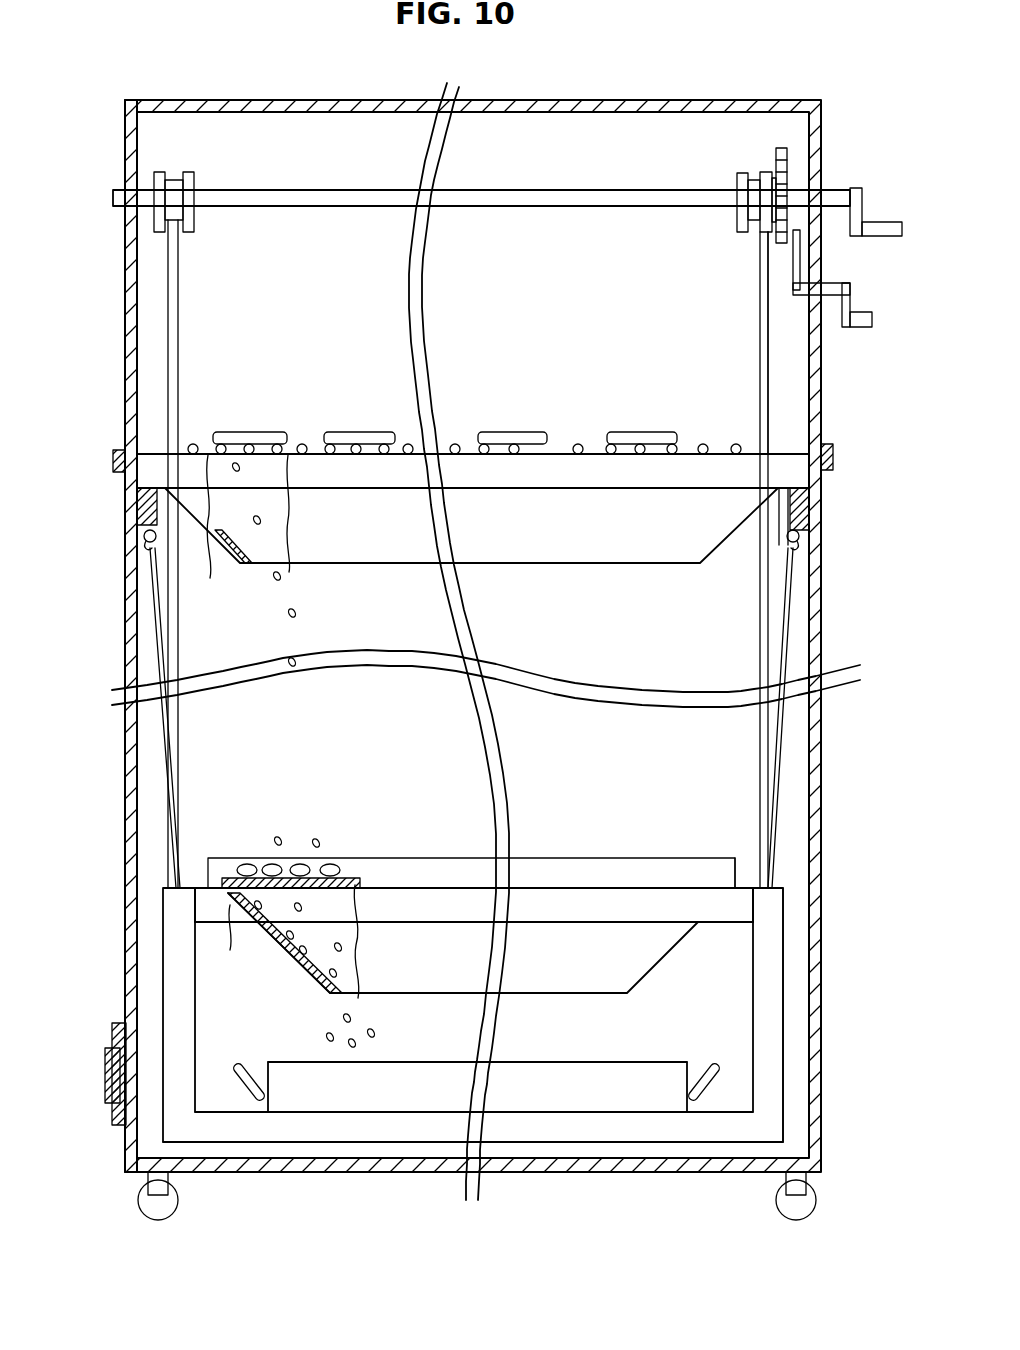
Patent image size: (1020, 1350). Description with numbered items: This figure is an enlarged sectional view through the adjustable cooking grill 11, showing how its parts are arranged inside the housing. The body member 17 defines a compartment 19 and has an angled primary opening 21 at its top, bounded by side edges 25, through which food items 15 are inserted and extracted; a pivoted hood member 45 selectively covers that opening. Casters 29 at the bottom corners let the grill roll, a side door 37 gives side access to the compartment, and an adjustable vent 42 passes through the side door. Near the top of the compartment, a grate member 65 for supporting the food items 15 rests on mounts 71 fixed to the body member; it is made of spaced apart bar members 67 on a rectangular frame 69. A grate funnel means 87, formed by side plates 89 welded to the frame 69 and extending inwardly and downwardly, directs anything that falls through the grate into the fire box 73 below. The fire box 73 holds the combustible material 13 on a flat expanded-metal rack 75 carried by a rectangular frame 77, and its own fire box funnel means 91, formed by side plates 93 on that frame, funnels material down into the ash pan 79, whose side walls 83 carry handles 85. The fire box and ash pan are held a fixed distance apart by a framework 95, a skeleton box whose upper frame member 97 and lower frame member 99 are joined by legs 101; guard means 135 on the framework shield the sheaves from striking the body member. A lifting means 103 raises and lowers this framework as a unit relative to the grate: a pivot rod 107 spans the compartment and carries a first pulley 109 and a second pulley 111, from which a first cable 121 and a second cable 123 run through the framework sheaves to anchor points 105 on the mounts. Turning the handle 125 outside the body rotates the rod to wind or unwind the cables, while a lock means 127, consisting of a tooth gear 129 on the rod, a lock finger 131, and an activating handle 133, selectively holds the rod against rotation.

The adjustable cooking grill 11 is at (790, 64).
The combustible material 13 is at (248, 862).
The food items 15 is at (328, 432).
The body member 17 is at (822, 613).
The compartment 19 is at (603, 767).
The primary opening 21 is at (782, 433).
The side edges 25 is at (119, 450).
The casters 29 is at (148, 1202).
The side door 37 is at (110, 1045).
The adjustable vent 42 is at (104, 1086).
The hood member 45 is at (122, 286).
The grate member 65 is at (714, 437).
The bar members 67 is at (195, 443).
The frame 69 is at (792, 470).
The mounts 71 is at (145, 505).
The fire box 73 is at (627, 857).
The rack 75 is at (356, 882).
The frame 77 is at (548, 872).
The ash pan 79 is at (618, 1056).
The side walls 83 is at (562, 1063).
The handles 85 is at (246, 1070).
The grate funnel means 87 is at (612, 568).
The side plates 89 is at (229, 555).
The fire box funnel means 91 is at (657, 968).
The side plates 93 is at (303, 960).
The framework 95 is at (793, 1040).
The upper frame member 97 is at (690, 886).
The lower frame member 99 is at (352, 1135).
The legs 101 is at (185, 990).
The lifting means 103 is at (708, 158).
The anchor points 105 is at (144, 538).
The pivot rod 107 is at (515, 195).
The first pulley 109 is at (736, 214).
The second pulley 111 is at (198, 212).
The first cable 121 is at (760, 304).
The second cable 123 is at (180, 330).
The handle 125 is at (884, 226).
The lock means 127 is at (782, 308).
The tooth gear 129 is at (782, 148).
The lock finger 131 is at (800, 262).
The activating handle 133 is at (862, 320).
The guard means 135 is at (162, 970).